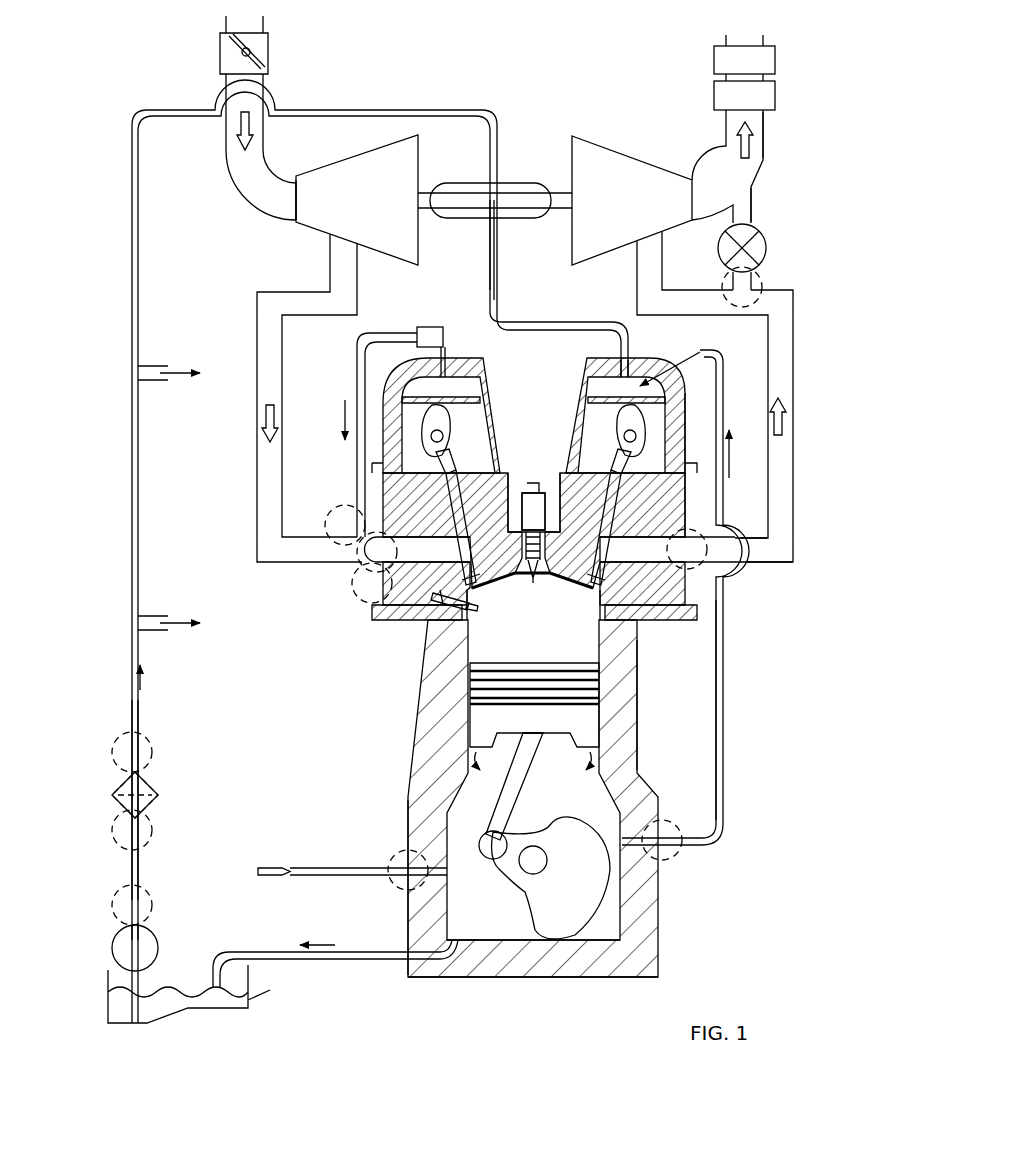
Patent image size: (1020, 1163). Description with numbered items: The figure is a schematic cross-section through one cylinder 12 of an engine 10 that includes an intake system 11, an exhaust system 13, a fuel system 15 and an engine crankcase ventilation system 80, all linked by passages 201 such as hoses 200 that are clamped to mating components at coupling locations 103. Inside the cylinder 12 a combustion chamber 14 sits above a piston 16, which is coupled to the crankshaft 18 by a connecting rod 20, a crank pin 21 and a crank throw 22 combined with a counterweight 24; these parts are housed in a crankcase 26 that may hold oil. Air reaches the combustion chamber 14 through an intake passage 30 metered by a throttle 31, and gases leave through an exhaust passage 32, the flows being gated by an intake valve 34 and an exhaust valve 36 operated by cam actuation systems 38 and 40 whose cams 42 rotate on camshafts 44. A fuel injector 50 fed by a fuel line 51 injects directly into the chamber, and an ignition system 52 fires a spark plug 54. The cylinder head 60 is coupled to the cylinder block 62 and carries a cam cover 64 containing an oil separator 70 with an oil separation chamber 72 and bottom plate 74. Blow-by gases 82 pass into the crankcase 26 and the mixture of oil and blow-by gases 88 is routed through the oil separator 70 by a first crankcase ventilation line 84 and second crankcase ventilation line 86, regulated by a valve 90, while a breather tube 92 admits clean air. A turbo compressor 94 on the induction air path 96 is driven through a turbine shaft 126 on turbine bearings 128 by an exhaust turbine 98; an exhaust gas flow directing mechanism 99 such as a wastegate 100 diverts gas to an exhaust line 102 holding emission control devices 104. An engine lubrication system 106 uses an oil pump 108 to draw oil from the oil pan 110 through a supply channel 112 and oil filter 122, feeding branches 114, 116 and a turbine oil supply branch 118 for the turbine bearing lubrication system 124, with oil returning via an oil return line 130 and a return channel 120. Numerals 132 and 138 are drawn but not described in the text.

The engine 10 is at (756, 935).
The intake system 11 is at (220, 210).
The cylinder 12 is at (600, 650).
The exhaust system 13 is at (812, 105).
The combustion chamber 14 is at (551, 631).
The fuel system 15 is at (104, 686).
The piston 16 is at (548, 725).
The crankshaft 18 is at (532, 850).
The connecting rod 20 is at (498, 806).
The crank pin 21 is at (488, 853).
The crank throw 22 is at (515, 880).
The counterweight 24 is at (572, 925).
The crankcase 26 is at (496, 925).
The intake passage 30 is at (430, 559).
The throttle 31 is at (258, 48).
The exhaust passage 32 is at (634, 559).
The intake valve 34 is at (462, 478).
The exhaust valve 36 is at (600, 478).
The cam actuation system 38 is at (432, 455).
The cam actuation system 40 is at (632, 455).
The cam 42 is at (449, 414).
The camshaft 44 is at (446, 436).
The fuel injector 50 is at (430, 628).
The fuel line 51 is at (433, 597).
The ignition system 52 is at (533, 483).
The spark plug 54 is at (546, 493).
The cylinder head 60 is at (686, 488).
The cylinder block 62 is at (638, 748).
The cam cover 64 is at (682, 440).
The oil separator 70 is at (658, 353).
The oil separation chamber 72 is at (624, 393).
The bottom plate 74 is at (485, 372).
The engine crankcase ventilation system 80 is at (318, 686).
The blow-by gases 82 is at (586, 758).
The first crankcase ventilation line 84 is at (724, 812).
The second crankcase ventilation line 86 is at (362, 355).
The mixture of oil and blow-by gases 88 is at (740, 462).
The valve 90 is at (432, 327).
The breather tube 92 is at (333, 876).
The turbo compressor 94 is at (378, 209).
The induction air path 96 is at (286, 202).
The exhaust turbine 98 is at (642, 209).
The exhaust gas flow directing mechanism 99 is at (752, 228).
The wastegate 100 is at (742, 248).
The exhaust line 102 is at (728, 150).
The coupling location 103 is at (758, 268).
The emission control device 104 is at (769, 69).
The engine lubrication system 106 is at (248, 802).
The oil pump 108 is at (158, 938).
The oil pan 110 is at (206, 974).
The supply channel 112 is at (140, 440).
The branch 114 is at (152, 616).
The branch 116 is at (152, 373).
The turbine oil supply branch 118 is at (345, 105).
The return channel 120 is at (340, 960).
The oil filter 122 is at (140, 772).
The turbine bearing lubrication system 124 is at (566, 98).
The turbine shaft 126 is at (445, 183).
The turbine bearing 128 is at (526, 183).
The oil return line 130 is at (488, 273).
The exhaust line 132 is at (775, 185).
The coolant connection 138 is at (738, 351).
The hose 200 is at (325, 292).
The passage 201 is at (140, 538).